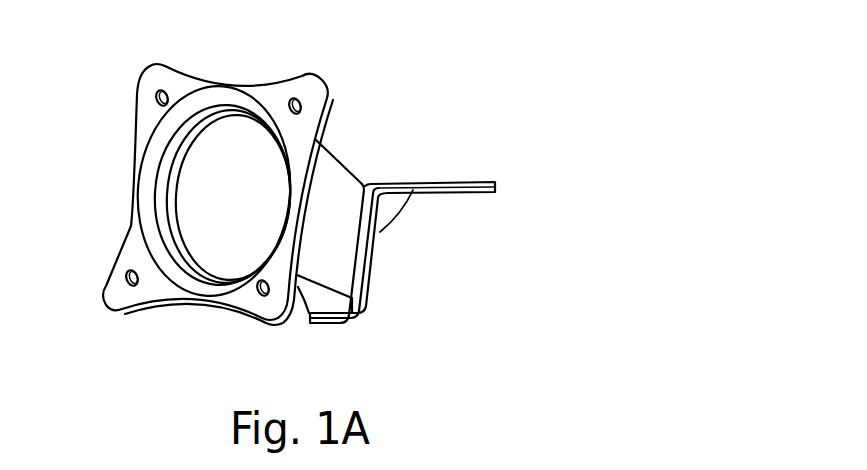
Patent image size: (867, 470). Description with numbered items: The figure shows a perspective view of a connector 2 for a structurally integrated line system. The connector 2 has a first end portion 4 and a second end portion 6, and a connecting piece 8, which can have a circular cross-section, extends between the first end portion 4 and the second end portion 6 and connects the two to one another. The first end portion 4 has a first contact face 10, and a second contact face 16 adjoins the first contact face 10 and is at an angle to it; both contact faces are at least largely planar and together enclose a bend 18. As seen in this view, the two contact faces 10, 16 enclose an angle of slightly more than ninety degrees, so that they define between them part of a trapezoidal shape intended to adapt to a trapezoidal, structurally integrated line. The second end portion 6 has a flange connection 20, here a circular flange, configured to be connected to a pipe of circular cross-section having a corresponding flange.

The connector 2 is at (380, 85).
The first end portion 4 is at (377, 313).
The second end portion 6 is at (148, 332).
The connecting piece 8 is at (305, 288).
The first contact face 10 is at (382, 285).
The second contact face 16 is at (472, 198).
The bend 18 is at (378, 178).
The flange connection 20 is at (142, 127).